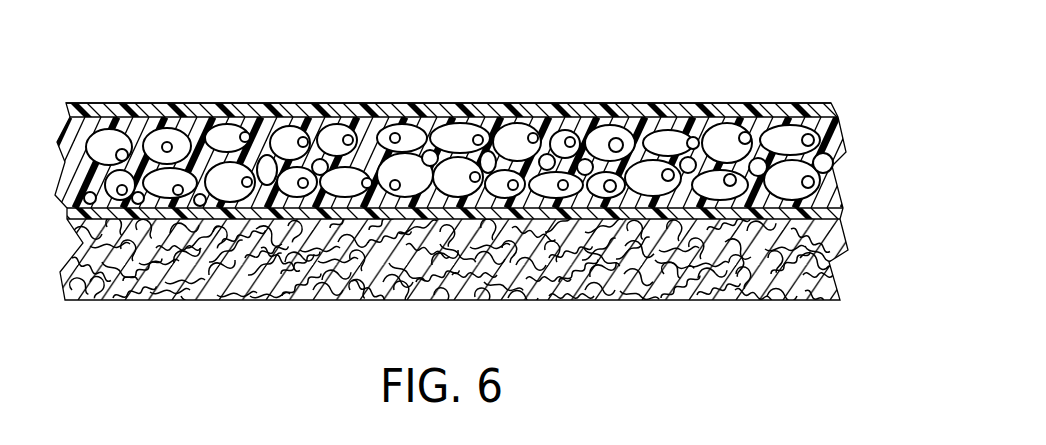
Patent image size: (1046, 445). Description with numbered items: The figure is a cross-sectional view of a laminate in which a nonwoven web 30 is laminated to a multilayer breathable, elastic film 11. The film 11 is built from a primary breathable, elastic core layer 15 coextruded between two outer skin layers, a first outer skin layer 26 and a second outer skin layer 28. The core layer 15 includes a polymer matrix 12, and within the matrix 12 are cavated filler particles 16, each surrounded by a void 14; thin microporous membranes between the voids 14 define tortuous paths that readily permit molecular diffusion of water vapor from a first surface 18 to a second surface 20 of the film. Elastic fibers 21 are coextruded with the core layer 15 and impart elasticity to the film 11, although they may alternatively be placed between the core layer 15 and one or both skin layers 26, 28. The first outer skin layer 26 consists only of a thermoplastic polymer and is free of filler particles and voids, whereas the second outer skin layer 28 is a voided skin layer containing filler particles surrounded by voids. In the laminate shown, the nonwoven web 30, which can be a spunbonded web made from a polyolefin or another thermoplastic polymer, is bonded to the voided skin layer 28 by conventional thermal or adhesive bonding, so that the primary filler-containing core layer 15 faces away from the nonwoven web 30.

The multilayer breathable, elastic film 11 is at (828, 192).
The polymer matrix 12 is at (740, 113).
The voids 14 is at (590, 125).
The core layer 15 is at (448, 125).
The filler particles 16 is at (618, 140).
The first surface 18 is at (150, 110).
The second surface 20 is at (165, 223).
The elastic fibers 21 is at (362, 127).
The first outer skin layer 26 is at (833, 113).
The second outer skin layer 28 is at (825, 210).
The nonwoven web 30 is at (637, 265).